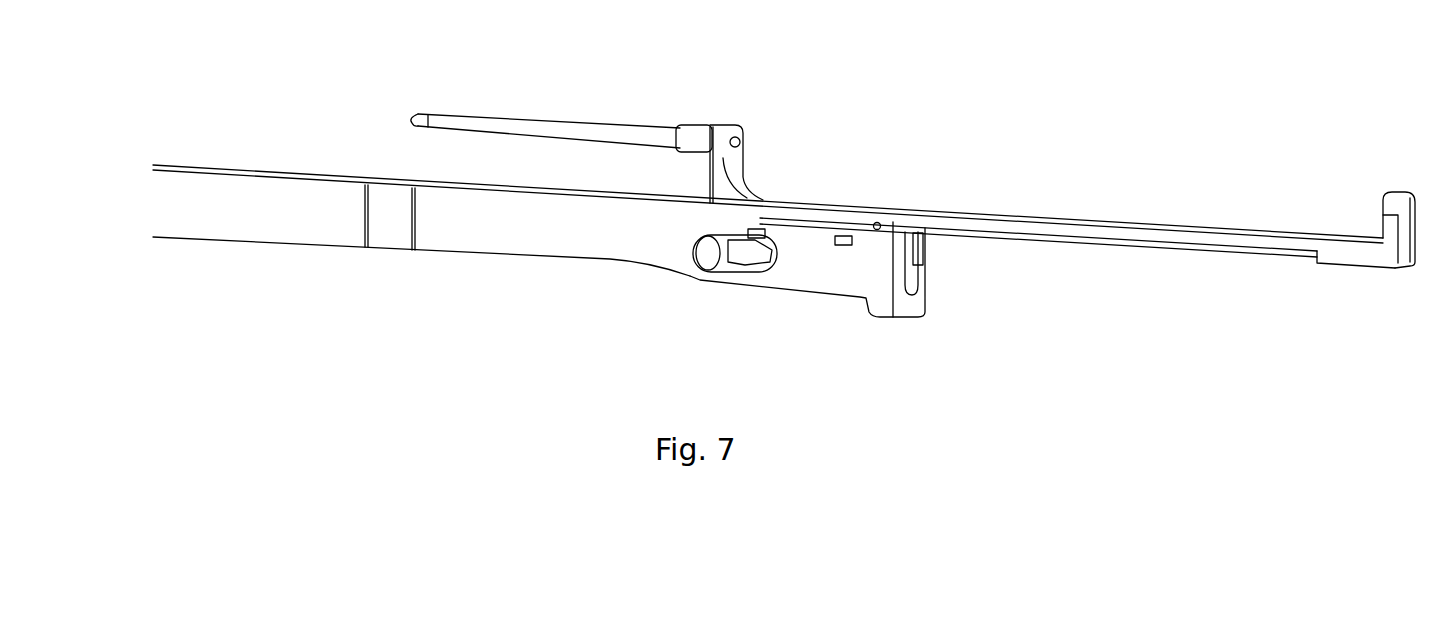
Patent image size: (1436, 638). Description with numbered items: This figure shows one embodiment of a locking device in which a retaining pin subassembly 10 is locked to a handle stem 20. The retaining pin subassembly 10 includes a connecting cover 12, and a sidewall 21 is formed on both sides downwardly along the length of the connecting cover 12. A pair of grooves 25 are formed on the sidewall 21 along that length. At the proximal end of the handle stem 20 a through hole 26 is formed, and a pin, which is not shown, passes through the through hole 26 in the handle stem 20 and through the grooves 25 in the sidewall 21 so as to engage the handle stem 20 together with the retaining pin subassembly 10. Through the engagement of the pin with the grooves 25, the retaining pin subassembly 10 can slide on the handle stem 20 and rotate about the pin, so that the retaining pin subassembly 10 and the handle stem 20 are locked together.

The retaining pin subassembly 10 is at (789, 125).
The connecting cover 12 is at (1210, 230).
The handle stem 20 is at (628, 247).
The sidewall 21 is at (1357, 256).
The grooves 25 is at (1240, 247).
The through hole 26 is at (877, 226).